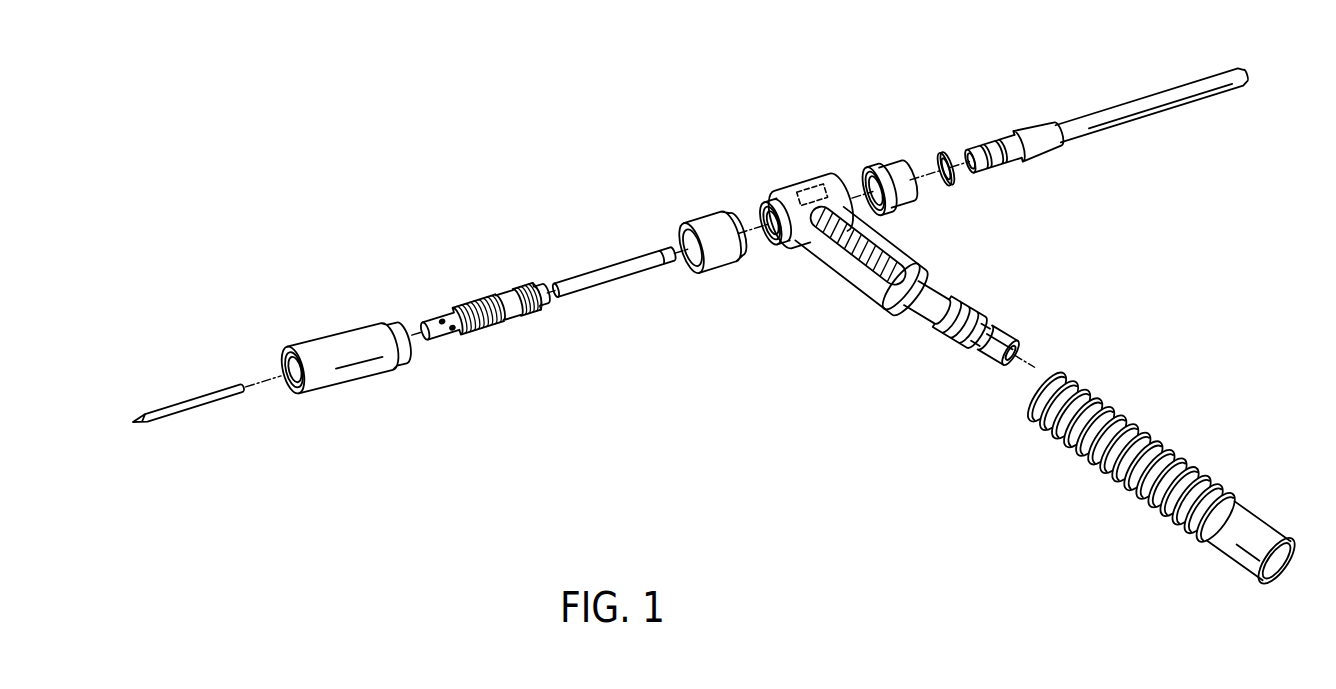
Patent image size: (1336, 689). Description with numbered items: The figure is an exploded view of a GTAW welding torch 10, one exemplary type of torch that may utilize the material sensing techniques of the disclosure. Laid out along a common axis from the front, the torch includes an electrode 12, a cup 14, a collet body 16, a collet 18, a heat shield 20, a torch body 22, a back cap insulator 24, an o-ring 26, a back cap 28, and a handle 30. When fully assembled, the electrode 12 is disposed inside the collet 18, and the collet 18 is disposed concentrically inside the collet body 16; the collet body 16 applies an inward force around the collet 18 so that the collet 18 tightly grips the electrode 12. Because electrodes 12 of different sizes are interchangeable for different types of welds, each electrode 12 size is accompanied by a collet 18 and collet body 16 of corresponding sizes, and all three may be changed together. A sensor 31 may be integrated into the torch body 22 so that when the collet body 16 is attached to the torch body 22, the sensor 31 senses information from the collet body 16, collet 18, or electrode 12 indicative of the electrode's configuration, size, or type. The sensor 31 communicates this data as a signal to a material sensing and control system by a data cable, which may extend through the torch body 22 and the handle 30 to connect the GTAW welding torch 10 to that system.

The GTAW welding torch 10 is at (531, 99).
The electrode 12 is at (194, 410).
The cup 14 is at (349, 379).
The collet body 16 is at (493, 327).
The collet 18 is at (608, 282).
The heat shield 20 is at (722, 268).
The torch body 22 is at (877, 302).
The back cap insulator 24 is at (905, 207).
The o-ring 26 is at (938, 152).
The back cap 28 is at (1105, 136).
The handle 30 is at (1163, 433).
The sensor 31 is at (814, 178).